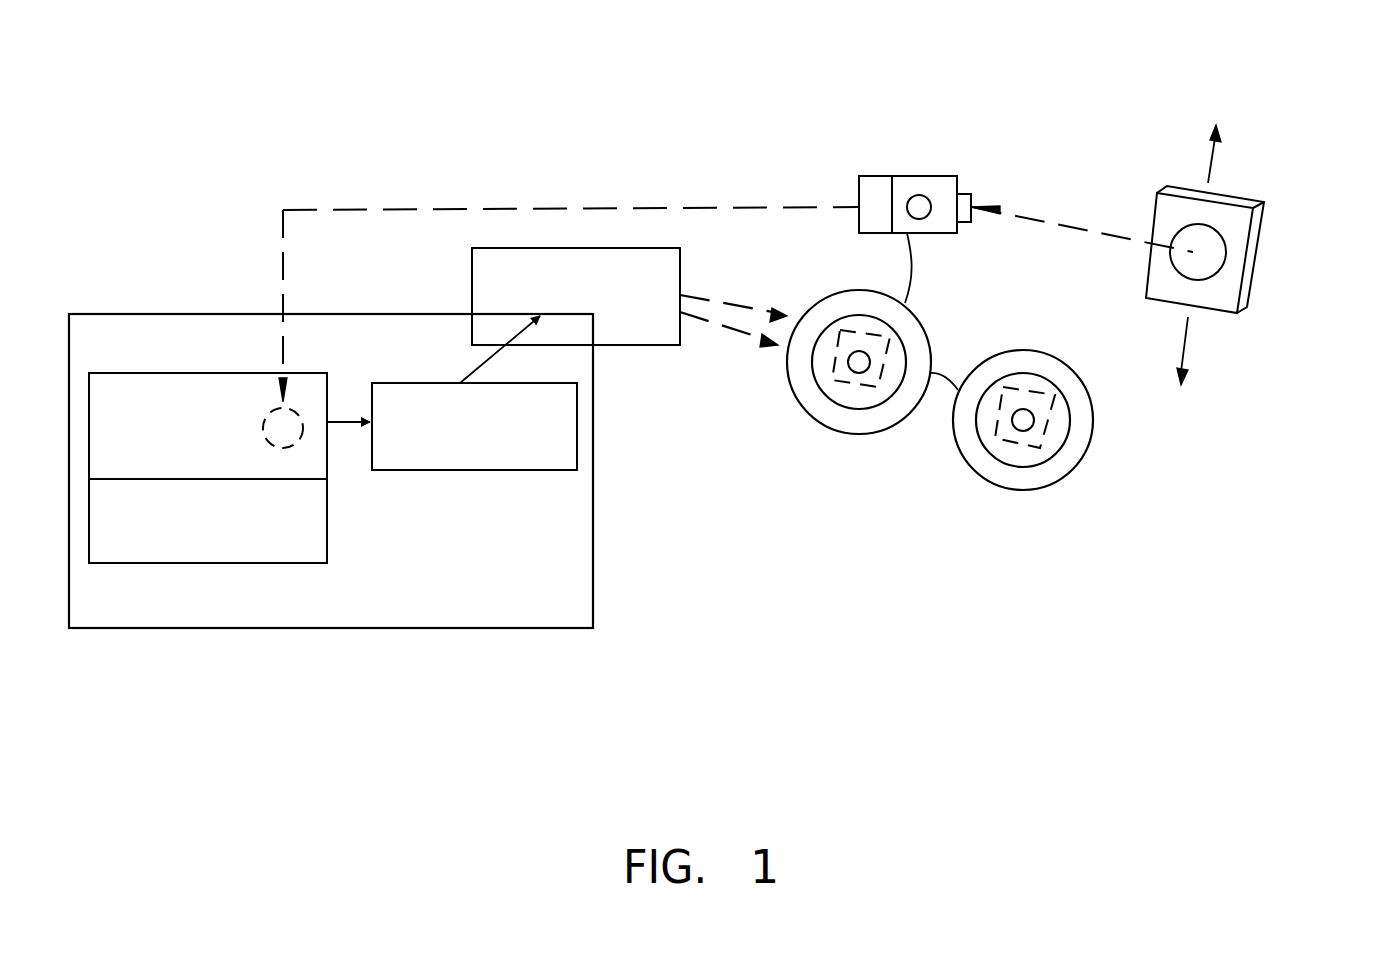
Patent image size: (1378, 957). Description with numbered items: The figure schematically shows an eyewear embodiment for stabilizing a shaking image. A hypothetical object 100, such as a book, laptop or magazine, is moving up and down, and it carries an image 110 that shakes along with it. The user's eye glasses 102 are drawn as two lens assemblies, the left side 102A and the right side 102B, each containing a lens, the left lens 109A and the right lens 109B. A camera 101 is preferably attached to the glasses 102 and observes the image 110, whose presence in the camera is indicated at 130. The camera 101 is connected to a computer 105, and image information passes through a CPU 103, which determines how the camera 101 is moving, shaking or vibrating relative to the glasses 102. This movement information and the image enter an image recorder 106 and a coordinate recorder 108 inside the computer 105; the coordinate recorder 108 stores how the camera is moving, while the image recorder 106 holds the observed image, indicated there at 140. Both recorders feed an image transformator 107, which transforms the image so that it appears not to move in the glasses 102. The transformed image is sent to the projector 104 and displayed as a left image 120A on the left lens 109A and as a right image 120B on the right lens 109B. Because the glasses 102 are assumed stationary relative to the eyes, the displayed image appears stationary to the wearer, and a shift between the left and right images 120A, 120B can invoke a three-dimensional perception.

The object 100 is at (1259, 250).
The image 110 is at (1213, 272).
The camera 101 is at (914, 191).
The CPU 103 is at (873, 176).
The image presence in camera 130 is at (922, 203).
The projector 104 is at (472, 296).
The computer 105 is at (230, 628).
The image recorder 106 is at (150, 373).
The coordinate recorder 108 is at (327, 538).
The image transformator 107 is at (480, 470).
The image in image recorder 140 is at (303, 413).
The eye glasses 102 is at (805, 410).
The left side of glasses 102A is at (821, 425).
The right side of glasses 102B is at (1087, 463).
The left lens 109A is at (898, 393).
The right lens 109B is at (1068, 405).
The left displayed image 120A is at (850, 362).
The right displayed image 120B is at (1020, 431).